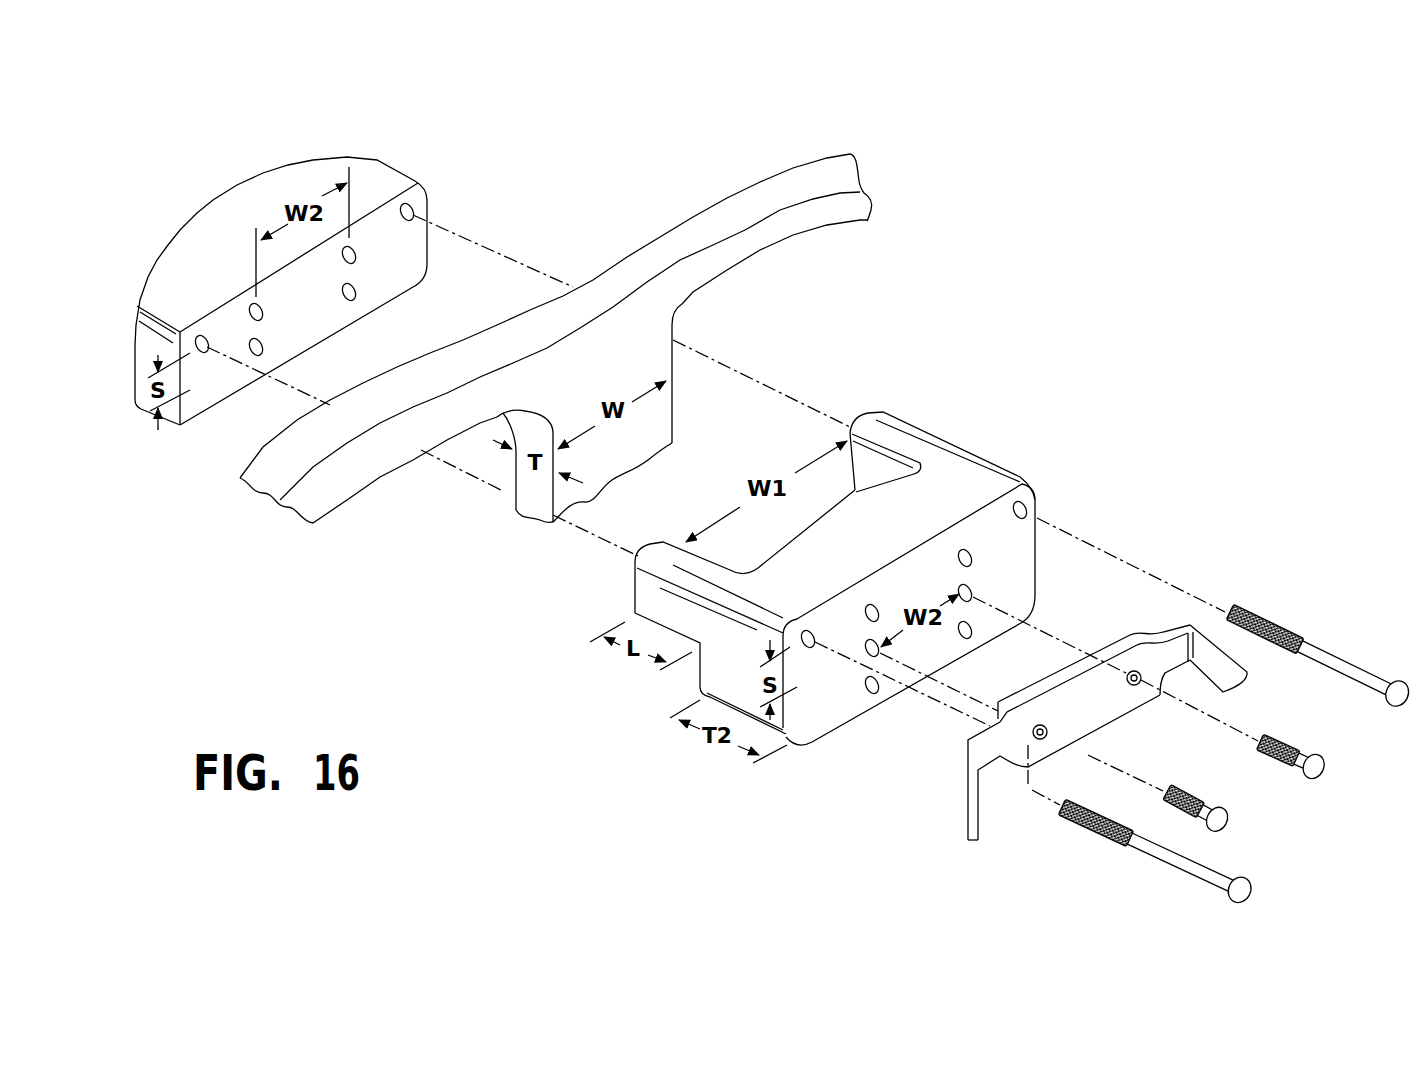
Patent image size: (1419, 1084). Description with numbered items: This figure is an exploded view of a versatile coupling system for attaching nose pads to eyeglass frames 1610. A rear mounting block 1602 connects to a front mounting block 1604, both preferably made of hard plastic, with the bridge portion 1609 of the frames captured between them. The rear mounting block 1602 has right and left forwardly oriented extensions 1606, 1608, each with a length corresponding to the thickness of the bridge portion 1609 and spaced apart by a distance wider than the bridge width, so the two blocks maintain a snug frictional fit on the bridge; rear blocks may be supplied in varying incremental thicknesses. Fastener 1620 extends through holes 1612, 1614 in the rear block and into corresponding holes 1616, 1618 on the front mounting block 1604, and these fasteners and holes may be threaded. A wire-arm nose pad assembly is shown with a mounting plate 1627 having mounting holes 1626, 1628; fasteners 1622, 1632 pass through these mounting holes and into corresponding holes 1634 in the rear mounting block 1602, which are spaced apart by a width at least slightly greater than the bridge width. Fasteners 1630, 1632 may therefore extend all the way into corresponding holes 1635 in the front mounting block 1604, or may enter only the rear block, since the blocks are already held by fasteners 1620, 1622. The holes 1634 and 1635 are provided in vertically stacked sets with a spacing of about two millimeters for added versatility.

The rear mounting block 1602 is at (990, 406).
The front mounting block 1604 is at (549, 100).
The right forwardly oriented extension 1606 is at (898, 433).
The left forwardly oriented extension 1608 is at (640, 600).
The bridge portion 1609 is at (605, 352).
The eyeglass frames 1610 is at (767, 190).
The hole in rear block 1612 is at (1030, 503).
The hole in rear block 1614 is at (810, 633).
The hole on front mounting block 1616 is at (414, 210).
The hole on front mounting block 1618 is at (203, 342).
The fastener 1620 is at (1270, 620).
The fastener 1622 is at (1145, 855).
The mounting hole 1626 is at (1045, 727).
The mounting plate 1627 is at (1110, 713).
The mounting hole 1628 is at (1136, 674).
The fastener 1630 is at (1210, 807).
The fastener 1632 is at (1300, 753).
The holes in rear mounting block 1634 is at (960, 546).
The holes in front mounting block 1635 is at (265, 350).